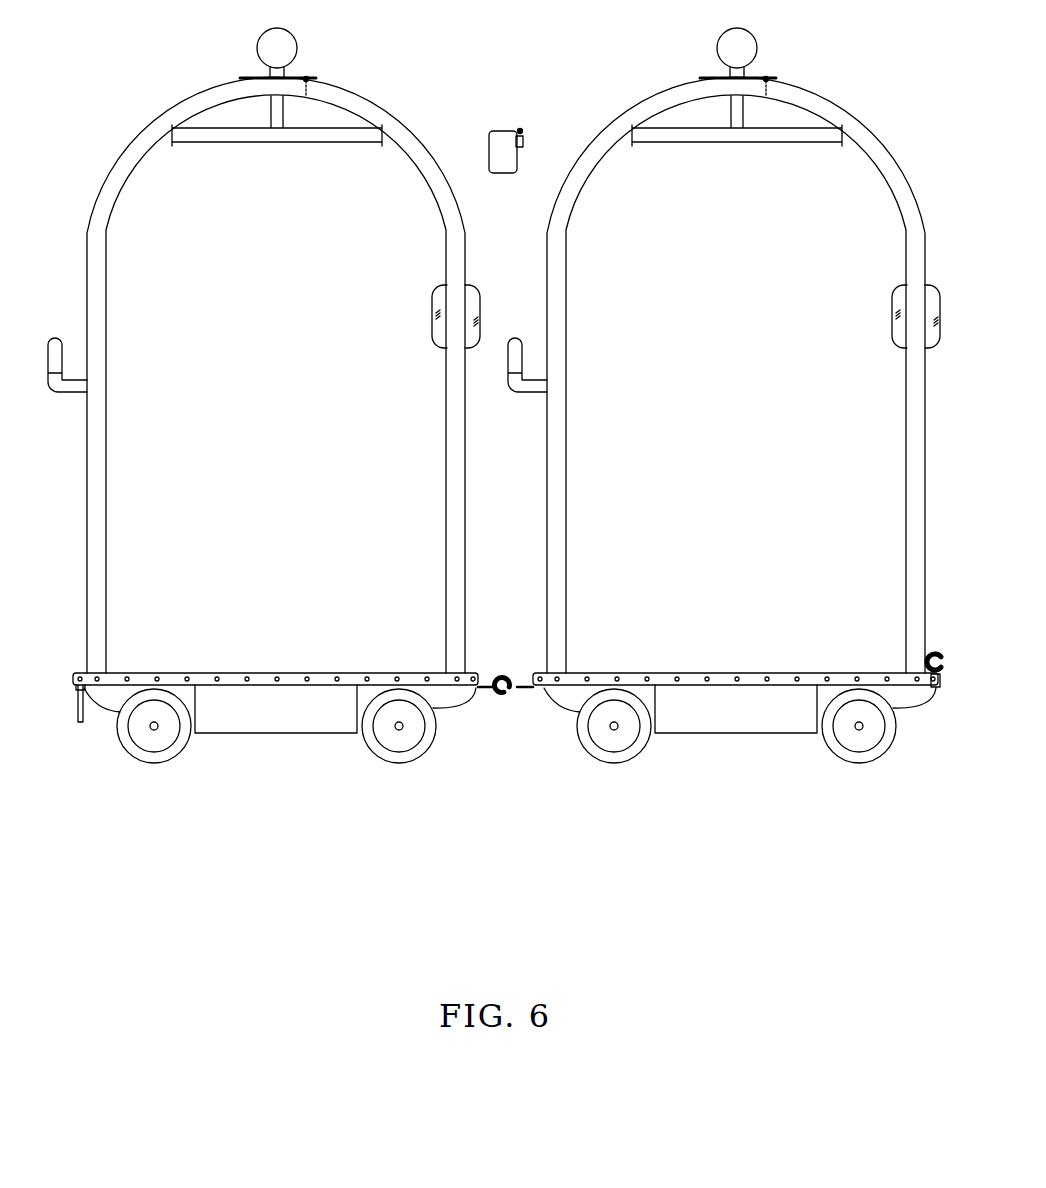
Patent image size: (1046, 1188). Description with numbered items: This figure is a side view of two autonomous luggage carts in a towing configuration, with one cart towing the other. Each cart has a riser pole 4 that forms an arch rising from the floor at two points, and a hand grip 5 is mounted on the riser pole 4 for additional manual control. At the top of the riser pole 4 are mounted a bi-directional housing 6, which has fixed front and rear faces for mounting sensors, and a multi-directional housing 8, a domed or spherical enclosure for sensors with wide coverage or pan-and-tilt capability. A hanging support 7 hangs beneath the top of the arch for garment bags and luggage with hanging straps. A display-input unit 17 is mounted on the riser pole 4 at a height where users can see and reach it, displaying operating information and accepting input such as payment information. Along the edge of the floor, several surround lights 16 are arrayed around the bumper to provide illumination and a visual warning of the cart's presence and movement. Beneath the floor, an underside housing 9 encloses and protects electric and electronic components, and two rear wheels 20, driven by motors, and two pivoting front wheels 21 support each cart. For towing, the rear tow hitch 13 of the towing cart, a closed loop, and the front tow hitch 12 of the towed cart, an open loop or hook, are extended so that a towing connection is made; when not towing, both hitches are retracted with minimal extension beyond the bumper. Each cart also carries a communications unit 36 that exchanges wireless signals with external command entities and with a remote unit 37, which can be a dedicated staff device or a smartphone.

The riser pole 4 is at (95, 252).
The hand grip 5 is at (60, 346).
The bi-directional housing 6 is at (306, 78).
The hanging support 7 is at (201, 142).
The multi-directional housing 8 is at (291, 35).
The underside housing 9 is at (282, 728).
The front tow hitch 12 is at (503, 672).
The rear tow hitch 13 is at (79, 722).
The surround light 16 is at (247, 678).
The display-input unit 17 is at (437, 300).
The rear wheel 20 is at (155, 748).
The front wheel 21 is at (403, 748).
The communications unit 36 is at (311, 79).
The remote unit 37 is at (500, 173).